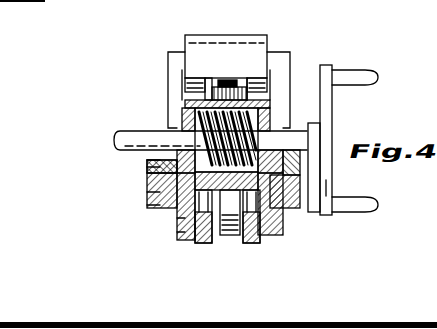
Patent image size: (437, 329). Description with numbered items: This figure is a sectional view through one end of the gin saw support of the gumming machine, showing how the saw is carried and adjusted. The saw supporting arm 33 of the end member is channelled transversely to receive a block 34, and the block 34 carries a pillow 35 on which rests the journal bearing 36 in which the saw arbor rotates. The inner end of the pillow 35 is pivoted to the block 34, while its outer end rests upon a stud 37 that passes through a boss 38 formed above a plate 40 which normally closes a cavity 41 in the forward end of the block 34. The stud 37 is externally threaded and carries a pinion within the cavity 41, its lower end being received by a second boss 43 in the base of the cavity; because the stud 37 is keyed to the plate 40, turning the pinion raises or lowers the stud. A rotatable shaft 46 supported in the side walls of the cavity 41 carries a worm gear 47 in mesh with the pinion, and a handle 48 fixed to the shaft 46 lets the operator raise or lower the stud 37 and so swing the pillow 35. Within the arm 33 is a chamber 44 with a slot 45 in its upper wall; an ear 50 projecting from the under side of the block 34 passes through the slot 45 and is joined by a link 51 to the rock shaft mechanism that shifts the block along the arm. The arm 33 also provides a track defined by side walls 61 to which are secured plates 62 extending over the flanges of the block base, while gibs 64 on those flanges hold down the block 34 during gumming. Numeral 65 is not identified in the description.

The saw supporting arm 33 is at (147, 206).
The block 34 is at (180, 232).
The pillow 35 is at (226, 52).
The journal bearing 36 is at (168, 60).
The stud 37 is at (215, 83).
The boss 38 is at (200, 88).
The plate 40 is at (273, 105).
The cavity 41 is at (323, 128).
The second boss 43 is at (147, 175).
The chamber 44 is at (322, 214).
The slot 45 is at (333, 188).
The rotatable shaft 46 is at (137, 135).
The worm gear 47 is at (192, 115).
The handle 48 is at (334, 70).
The ear 50 is at (158, 239).
The link 51 is at (180, 218).
The side wall 61 is at (147, 192).
The plate 62 is at (147, 159).
The gib 64 is at (147, 167).
The locking nut 65 is at (292, 178).